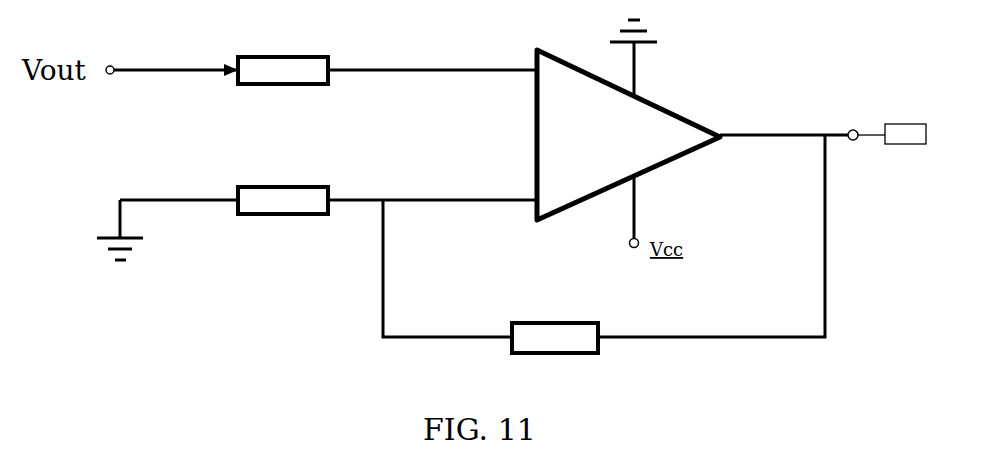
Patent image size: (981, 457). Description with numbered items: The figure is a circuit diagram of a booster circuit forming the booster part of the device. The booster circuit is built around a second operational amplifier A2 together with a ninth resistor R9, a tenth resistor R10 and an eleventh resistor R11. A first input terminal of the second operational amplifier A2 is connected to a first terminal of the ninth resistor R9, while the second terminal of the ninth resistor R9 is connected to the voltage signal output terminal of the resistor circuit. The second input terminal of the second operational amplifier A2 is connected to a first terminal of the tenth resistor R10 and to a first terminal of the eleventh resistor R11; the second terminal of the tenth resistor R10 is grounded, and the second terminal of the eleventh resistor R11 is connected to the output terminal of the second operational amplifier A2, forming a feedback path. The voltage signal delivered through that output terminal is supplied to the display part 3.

The display part 3 is at (910, 124).
The ninth resistor R9 is at (283, 50).
The tenth resistor R10 is at (283, 179).
The eleventh resistor R11 is at (555, 321).
The second operational amplifier A2 is at (628, 135).